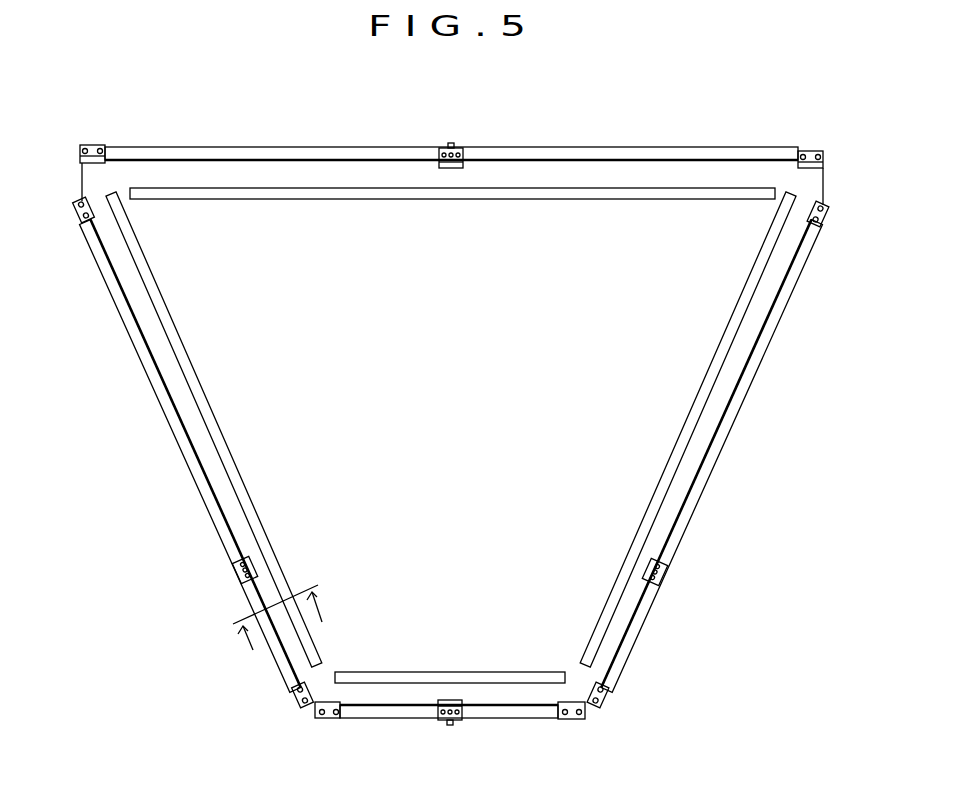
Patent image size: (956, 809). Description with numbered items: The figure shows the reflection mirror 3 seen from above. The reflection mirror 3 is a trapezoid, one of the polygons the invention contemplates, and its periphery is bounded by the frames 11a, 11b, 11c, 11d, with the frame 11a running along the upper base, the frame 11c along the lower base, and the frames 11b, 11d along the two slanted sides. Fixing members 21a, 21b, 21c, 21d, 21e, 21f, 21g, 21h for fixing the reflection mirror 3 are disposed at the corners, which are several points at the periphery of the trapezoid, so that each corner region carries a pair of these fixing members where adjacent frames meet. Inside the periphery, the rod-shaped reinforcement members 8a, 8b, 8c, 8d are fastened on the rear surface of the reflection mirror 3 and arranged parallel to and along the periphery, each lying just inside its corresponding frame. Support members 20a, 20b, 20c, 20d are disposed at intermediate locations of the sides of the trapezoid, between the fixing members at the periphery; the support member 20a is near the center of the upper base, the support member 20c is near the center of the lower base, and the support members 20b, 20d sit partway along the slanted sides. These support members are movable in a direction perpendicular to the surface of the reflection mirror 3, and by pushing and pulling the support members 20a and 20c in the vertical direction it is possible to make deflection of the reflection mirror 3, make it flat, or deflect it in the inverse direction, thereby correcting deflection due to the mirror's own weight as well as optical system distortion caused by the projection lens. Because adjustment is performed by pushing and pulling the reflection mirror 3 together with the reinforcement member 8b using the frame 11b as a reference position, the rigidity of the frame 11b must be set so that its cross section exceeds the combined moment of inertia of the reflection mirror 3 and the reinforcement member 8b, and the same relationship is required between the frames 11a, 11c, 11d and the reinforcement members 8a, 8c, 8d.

The reflection mirror 3 is at (320, 236).
The reinforcement member 8a is at (451, 200).
The reinforcement member 8b is at (262, 495).
The reinforcement member 8c is at (452, 672).
The reinforcement member 8d is at (646, 495).
The frame 11a is at (552, 147).
The frame 11b is at (193, 497).
The frame 11c is at (507, 718).
The frame 11d is at (711, 502).
The support member 20a is at (451, 143).
The support member 20b is at (236, 571).
The support member 20c is at (450, 725).
The support member 20d is at (667, 577).
The fixing member 21a is at (98, 145).
The fixing member 21b is at (76, 221).
The fixing member 21c is at (295, 702).
The fixing member 21d is at (326, 718).
The fixing member 21e is at (569, 719).
The fixing member 21f is at (603, 706).
The fixing member 21g is at (827, 224).
The fixing member 21h is at (810, 151).